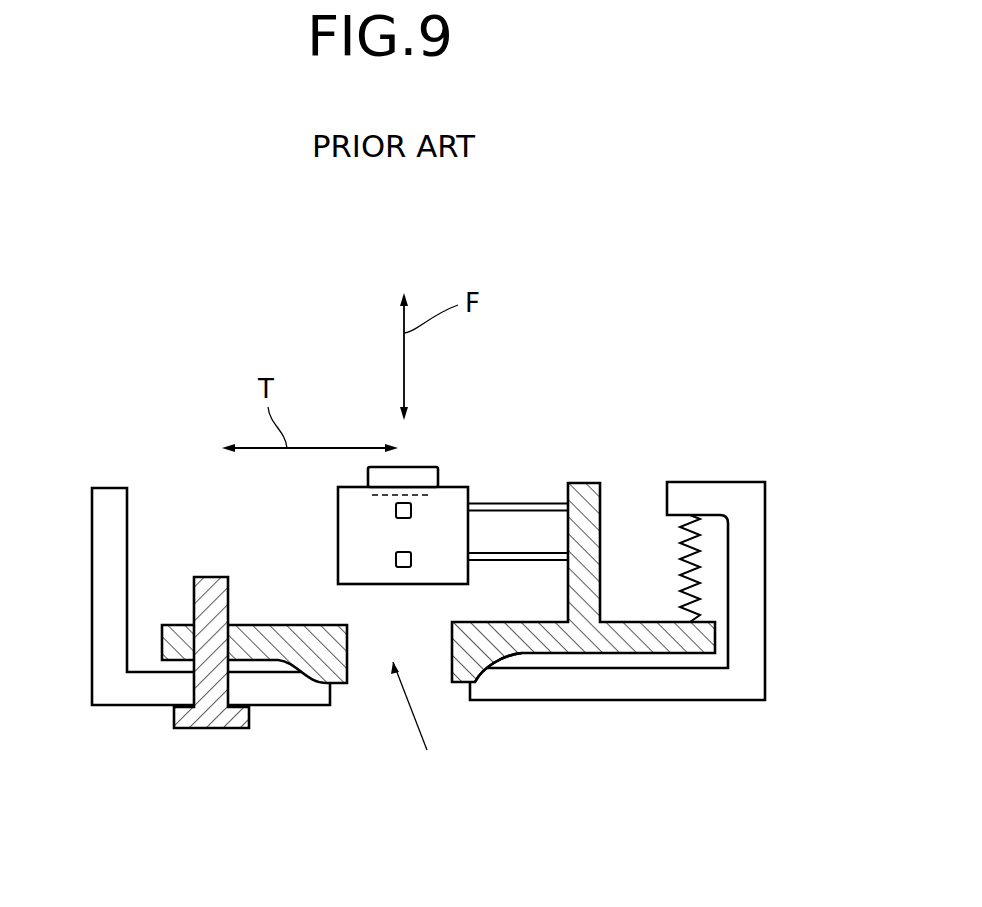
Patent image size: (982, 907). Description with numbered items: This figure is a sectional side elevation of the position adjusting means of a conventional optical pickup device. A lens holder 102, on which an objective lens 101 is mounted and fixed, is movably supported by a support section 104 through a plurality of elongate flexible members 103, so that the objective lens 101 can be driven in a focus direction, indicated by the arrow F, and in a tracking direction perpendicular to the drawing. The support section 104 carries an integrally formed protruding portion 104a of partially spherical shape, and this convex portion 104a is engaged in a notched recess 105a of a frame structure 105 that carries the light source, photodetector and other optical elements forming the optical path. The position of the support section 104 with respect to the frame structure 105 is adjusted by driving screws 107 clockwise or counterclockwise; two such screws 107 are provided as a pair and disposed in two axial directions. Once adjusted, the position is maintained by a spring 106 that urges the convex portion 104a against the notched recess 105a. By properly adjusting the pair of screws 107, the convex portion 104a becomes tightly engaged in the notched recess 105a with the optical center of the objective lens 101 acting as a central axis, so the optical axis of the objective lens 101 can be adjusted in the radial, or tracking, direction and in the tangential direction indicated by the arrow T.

The objective lens 101 is at (418, 467).
The lens holder 102 is at (458, 484).
The elongate flexible members 103 is at (545, 503).
The support section 104 is at (600, 508).
The protruding portion 104a is at (480, 677).
The frame structure 105 is at (752, 638).
The notched recess 105a is at (423, 727).
The spring 106 is at (703, 573).
The screws 107 is at (202, 730).